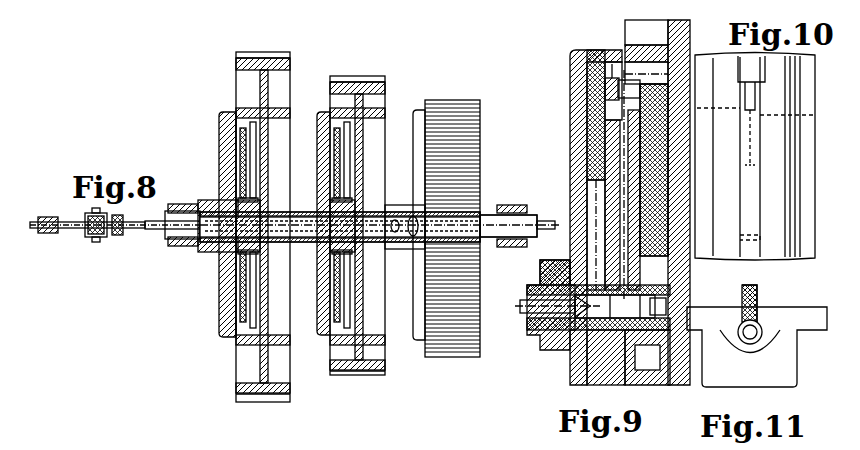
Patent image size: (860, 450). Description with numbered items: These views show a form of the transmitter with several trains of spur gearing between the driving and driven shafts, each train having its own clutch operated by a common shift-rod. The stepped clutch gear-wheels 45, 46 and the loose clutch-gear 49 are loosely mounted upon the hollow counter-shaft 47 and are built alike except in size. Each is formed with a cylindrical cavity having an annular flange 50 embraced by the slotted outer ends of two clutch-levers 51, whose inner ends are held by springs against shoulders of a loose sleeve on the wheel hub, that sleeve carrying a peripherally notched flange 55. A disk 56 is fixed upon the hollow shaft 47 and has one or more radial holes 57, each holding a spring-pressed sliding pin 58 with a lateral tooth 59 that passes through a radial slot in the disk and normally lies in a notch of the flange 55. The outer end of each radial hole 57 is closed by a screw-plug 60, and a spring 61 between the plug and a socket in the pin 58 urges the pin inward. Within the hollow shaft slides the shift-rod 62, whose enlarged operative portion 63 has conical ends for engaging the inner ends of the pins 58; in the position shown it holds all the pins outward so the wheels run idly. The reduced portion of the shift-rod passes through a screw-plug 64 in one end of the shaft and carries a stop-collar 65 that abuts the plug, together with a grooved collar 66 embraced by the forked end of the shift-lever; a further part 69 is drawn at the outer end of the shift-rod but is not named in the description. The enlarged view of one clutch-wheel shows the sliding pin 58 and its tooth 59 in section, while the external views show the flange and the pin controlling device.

In FIG. 8, the clutch gear-wheel 45 is at (285, 402).
In FIG. 8, the clutch gear-wheel 46 is at (387, 375).
In FIG. 8, the hollow counter-shaft 47 is at (492, 216).
In FIG. 8, the loose clutch-gear 49 is at (452, 357).
In FIG. 9, the annular flange 50 is at (684, 80).
In FIG. 9, the clutch-lever 51 is at (680, 250).
In FIG. 9, the peripherally notched flange 55 is at (630, 150).
In FIG. 9, the disk 56 is at (570, 85).
In FIG. 9, the radial hole 57 is at (600, 384).
In FIG. 9, the sliding pin 58 is at (575, 200).
In FIG. 9, the lateral tooth 59 is at (612, 78).
In FIG. 11, the lateral tooth 59 is at (758, 300).
In FIG. 9, the screw-plug 60 is at (590, 56).
In FIG. 9, the spring 61 is at (600, 105).
In FIG. 9, the shift-rod 62 is at (520, 306).
In FIG. 9, the operative portion 63 is at (598, 307).
In FIG. 8, the screw-plug 64 is at (182, 246).
In FIG. 8, the stop-collar 65 is at (118, 236).
In FIG. 8, the grooved collar 66 is at (95, 212).
In FIG. 8, the key 69 is at (58, 232).